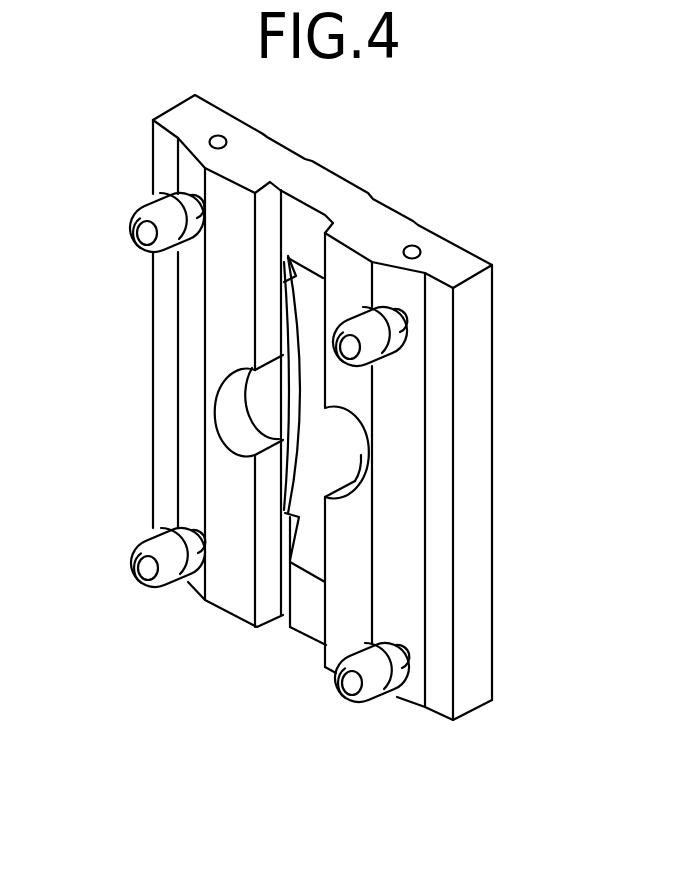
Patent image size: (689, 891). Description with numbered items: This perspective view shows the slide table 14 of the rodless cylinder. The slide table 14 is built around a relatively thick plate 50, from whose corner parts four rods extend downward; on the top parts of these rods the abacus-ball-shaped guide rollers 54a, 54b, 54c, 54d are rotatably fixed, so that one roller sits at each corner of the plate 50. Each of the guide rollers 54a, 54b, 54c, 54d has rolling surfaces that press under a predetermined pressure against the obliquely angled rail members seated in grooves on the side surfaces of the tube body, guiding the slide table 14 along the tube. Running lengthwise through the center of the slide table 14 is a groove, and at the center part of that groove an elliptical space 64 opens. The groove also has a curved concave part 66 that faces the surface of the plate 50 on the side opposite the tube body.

The slide table 14 is at (380, 188).
The plate 50 is at (332, 192).
The guide roller 54a is at (145, 200).
The guide roller 54b is at (381, 341).
The guide roller 54c is at (174, 583).
The guide roller 54d is at (379, 700).
The elliptical space 64 is at (236, 401).
The curved concave part 66 is at (317, 448).